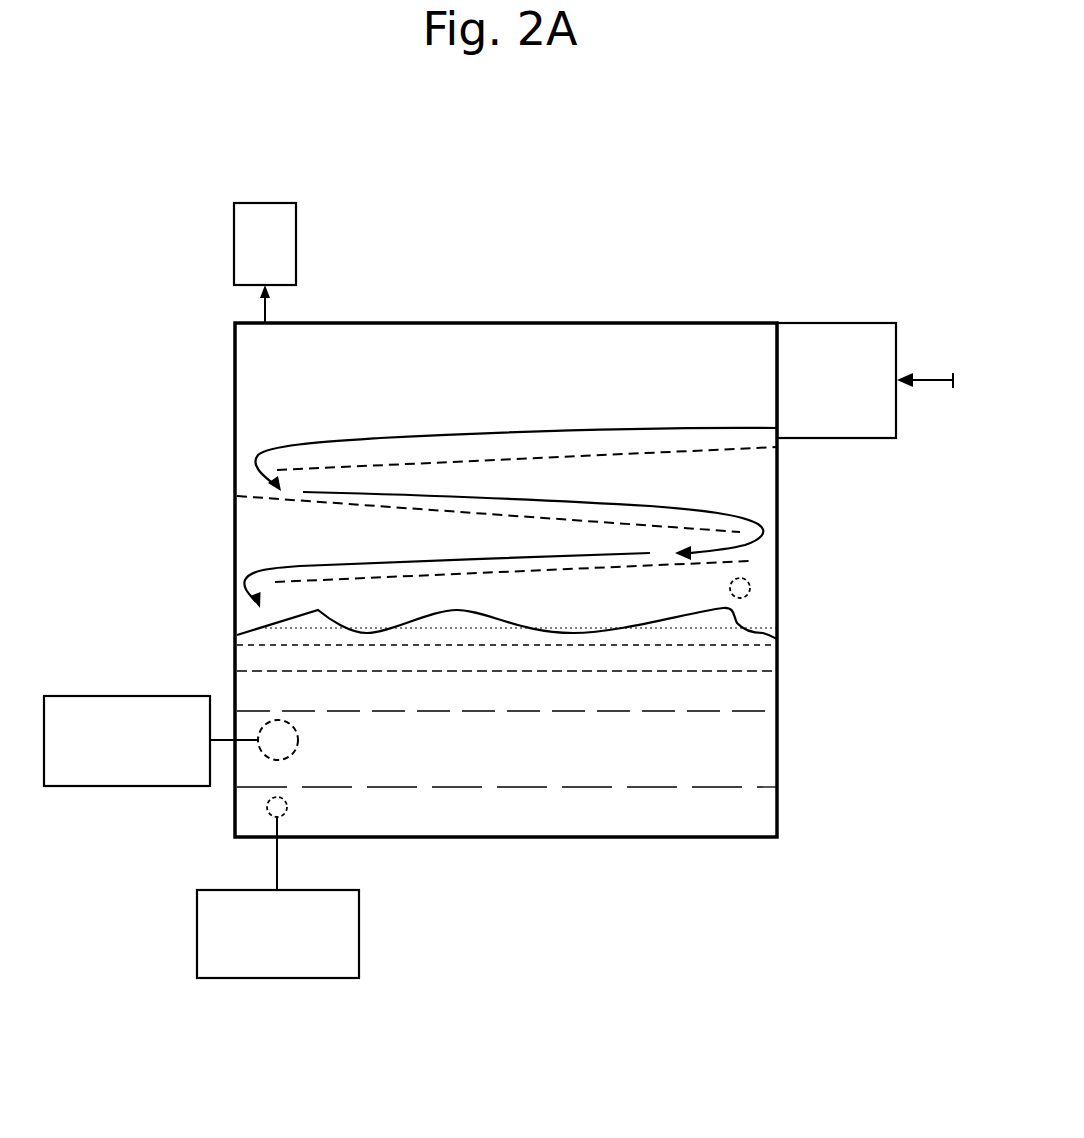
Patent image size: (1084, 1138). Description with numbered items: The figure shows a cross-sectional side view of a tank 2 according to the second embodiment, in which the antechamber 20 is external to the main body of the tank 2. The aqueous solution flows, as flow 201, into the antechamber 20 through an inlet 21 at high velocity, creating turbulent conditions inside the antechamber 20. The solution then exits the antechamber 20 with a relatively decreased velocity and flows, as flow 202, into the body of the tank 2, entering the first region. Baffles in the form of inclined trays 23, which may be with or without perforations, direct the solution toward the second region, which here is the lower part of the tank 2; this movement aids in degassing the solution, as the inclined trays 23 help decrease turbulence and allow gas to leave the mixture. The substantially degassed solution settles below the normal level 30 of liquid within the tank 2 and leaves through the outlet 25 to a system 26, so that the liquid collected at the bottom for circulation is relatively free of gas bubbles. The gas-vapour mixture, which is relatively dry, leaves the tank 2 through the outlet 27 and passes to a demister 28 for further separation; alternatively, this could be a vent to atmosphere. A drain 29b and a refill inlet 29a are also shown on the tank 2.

The tank 2 is at (464, 258).
The antechamber 20 is at (843, 321).
The inlet 21 is at (899, 372).
The aqueous solution flow into antechamber 201 is at (932, 385).
The flow into the body of the tank 202 is at (637, 427).
The inclined trays 23 is at (738, 452).
The outlet 25 is at (270, 722).
The system 26 is at (90, 786).
The outlet 27 is at (262, 320).
The demister 28 is at (256, 203).
The refill inlet 29a is at (751, 588).
The drain 29b is at (287, 814).
The normal level of liquid 30 is at (765, 632).